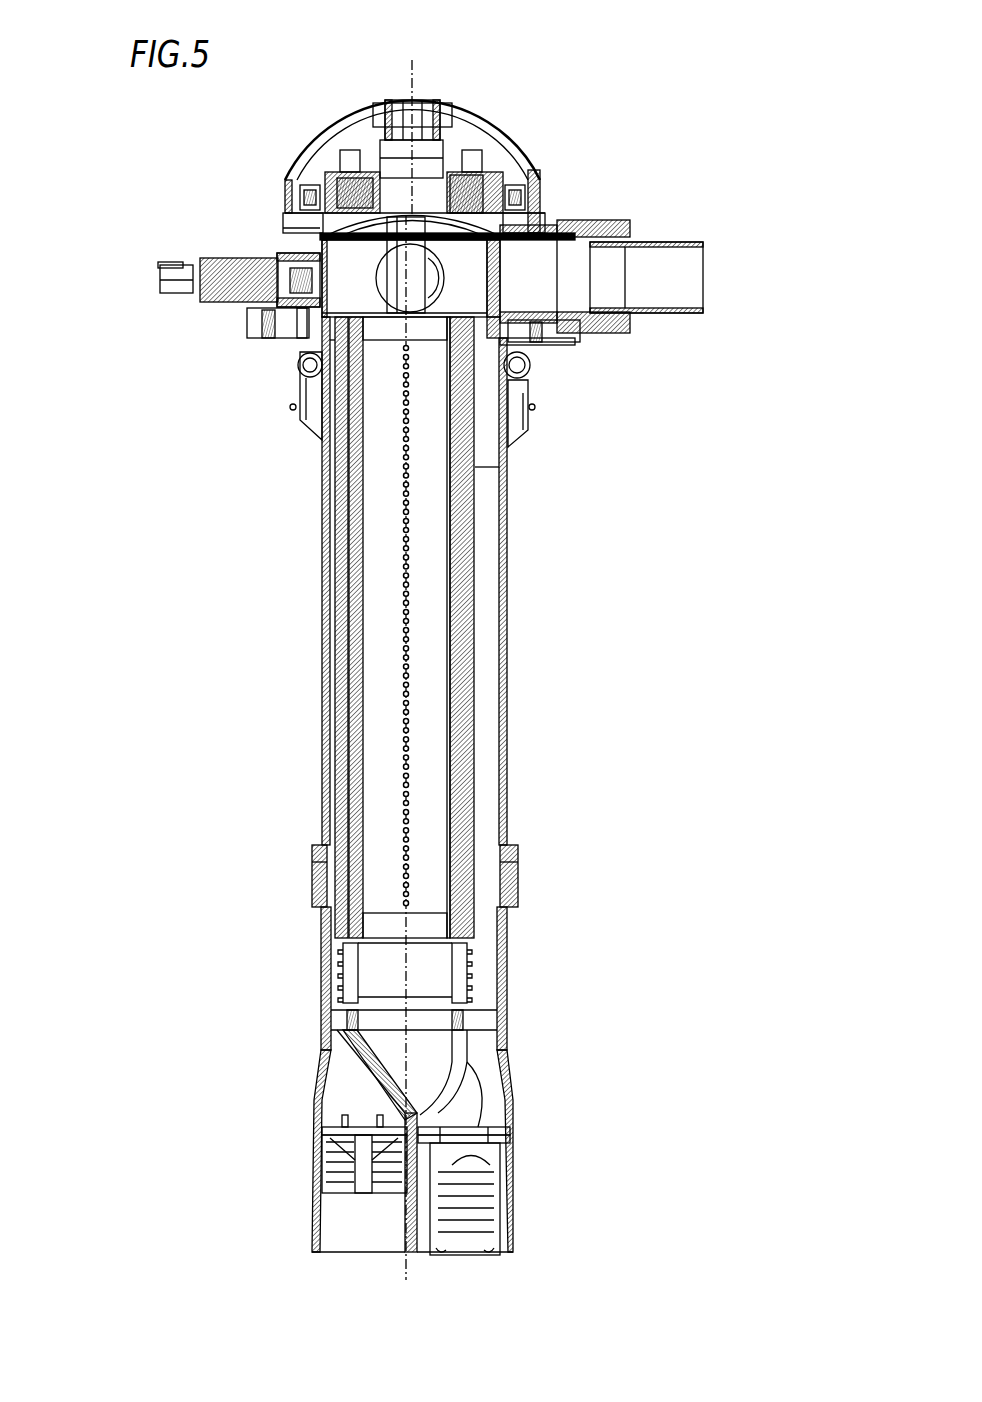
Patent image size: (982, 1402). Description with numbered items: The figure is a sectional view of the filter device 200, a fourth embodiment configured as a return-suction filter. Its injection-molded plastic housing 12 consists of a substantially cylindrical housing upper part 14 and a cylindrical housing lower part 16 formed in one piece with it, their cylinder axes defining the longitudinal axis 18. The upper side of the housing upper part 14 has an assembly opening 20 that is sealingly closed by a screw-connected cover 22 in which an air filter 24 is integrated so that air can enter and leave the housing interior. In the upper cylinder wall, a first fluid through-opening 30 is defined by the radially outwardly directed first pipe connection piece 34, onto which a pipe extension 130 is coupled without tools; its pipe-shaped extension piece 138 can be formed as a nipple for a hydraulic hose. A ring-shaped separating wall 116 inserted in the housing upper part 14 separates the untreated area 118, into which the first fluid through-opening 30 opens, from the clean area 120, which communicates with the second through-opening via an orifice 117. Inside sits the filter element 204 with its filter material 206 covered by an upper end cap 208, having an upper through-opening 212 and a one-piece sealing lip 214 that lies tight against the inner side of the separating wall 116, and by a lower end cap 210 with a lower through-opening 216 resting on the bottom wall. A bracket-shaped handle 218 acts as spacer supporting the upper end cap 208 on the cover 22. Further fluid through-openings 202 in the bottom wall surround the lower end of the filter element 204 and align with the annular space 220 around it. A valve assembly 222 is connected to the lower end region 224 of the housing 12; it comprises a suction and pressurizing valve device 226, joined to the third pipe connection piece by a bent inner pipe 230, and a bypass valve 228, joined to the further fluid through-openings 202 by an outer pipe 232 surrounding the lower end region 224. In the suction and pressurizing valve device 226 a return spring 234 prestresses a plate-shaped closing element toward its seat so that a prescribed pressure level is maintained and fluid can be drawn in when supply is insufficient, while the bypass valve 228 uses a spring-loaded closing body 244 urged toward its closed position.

The filter device 200 is at (463, 640).
The longitudinal axis 18 is at (412, 78).
The cover 22 is at (350, 116).
The air filter 24 is at (335, 188).
The assembly opening 20 is at (467, 206).
The housing upper part 14 is at (382, 155).
The orifice 117 is at (462, 268).
The clean area 120 is at (593, 261).
The bracket-shaped handle 218 is at (279, 282).
The pipe-shaped extension piece 138 is at (697, 306).
The separating wall 116 is at (488, 281).
The first fluid through-opening 30 is at (565, 233).
The first pipe connection piece 34 is at (535, 312).
The upper through-opening 212 is at (305, 300).
The pipe extension 130 is at (634, 277).
The upper end cap 208 is at (328, 300).
The untreated area 118 is at (485, 387).
The sealing lip 214 is at (318, 350).
The housing 12 is at (400, 581).
The housing lower part 16 is at (395, 581).
The annular space 220 is at (483, 598).
The filter material 206 is at (335, 656).
The filter element 204 is at (318, 747).
The lower end region 224 is at (513, 880).
The further fluid through-opening 202 is at (419, 633).
The lower end cap 210 is at (360, 984).
The lower through-opening 216 is at (380, 940).
The valve assembly 222 is at (428, 1079).
The bent inner pipe 230 is at (335, 1035).
The outer pipe 232 is at (507, 1020).
The suction and pressurizing valve device 226 is at (314, 1143).
The bypass valve 228 is at (519, 1164).
The closing body 244 is at (483, 1160).
The return spring 234 is at (335, 1176).